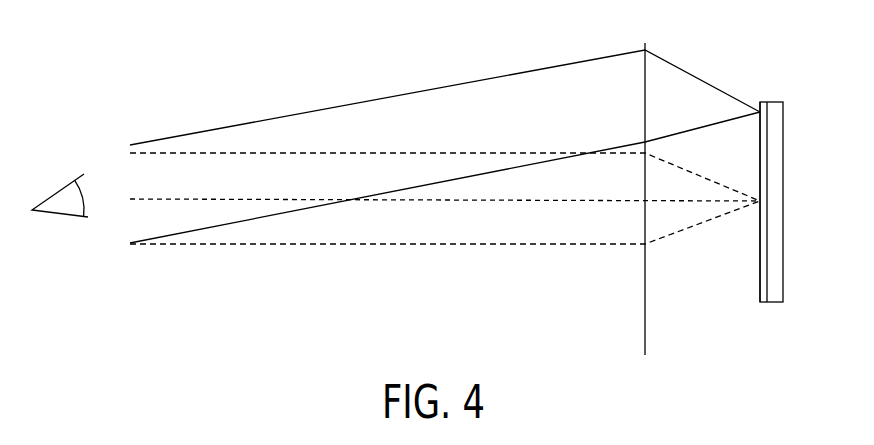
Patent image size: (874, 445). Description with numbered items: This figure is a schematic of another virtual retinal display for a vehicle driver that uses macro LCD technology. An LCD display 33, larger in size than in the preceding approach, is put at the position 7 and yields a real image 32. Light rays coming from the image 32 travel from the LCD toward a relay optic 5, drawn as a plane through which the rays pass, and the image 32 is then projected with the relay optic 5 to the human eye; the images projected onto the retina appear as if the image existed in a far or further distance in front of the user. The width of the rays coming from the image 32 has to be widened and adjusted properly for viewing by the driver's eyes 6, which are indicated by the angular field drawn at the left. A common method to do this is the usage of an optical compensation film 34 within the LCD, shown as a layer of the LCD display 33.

The relay optic 5 is at (645, 80).
The driver's eyes 6 is at (65, 200).
The position 7 is at (760, 101).
The real image 32 is at (760, 287).
The LCD display 33 is at (772, 137).
The optical compensation film 34 is at (765, 260).